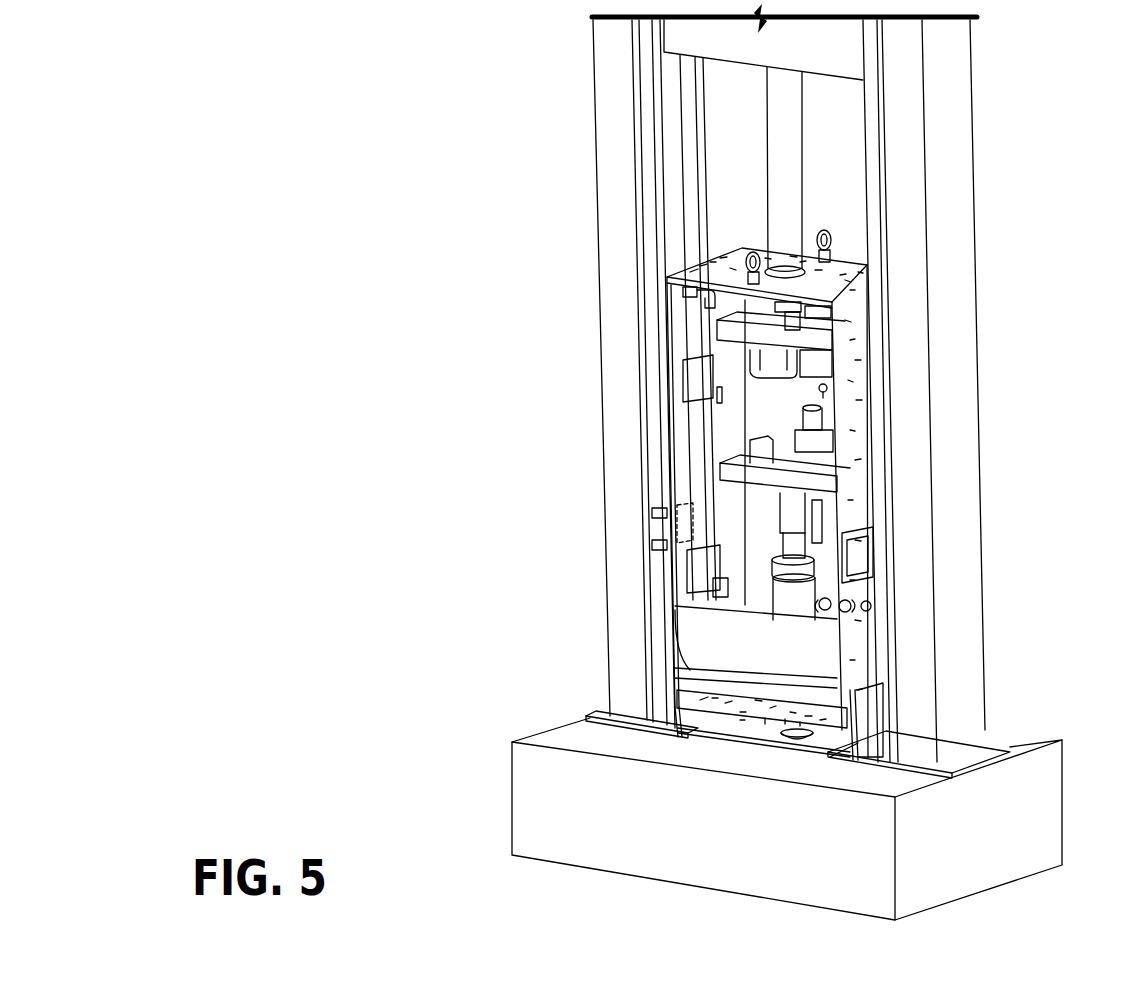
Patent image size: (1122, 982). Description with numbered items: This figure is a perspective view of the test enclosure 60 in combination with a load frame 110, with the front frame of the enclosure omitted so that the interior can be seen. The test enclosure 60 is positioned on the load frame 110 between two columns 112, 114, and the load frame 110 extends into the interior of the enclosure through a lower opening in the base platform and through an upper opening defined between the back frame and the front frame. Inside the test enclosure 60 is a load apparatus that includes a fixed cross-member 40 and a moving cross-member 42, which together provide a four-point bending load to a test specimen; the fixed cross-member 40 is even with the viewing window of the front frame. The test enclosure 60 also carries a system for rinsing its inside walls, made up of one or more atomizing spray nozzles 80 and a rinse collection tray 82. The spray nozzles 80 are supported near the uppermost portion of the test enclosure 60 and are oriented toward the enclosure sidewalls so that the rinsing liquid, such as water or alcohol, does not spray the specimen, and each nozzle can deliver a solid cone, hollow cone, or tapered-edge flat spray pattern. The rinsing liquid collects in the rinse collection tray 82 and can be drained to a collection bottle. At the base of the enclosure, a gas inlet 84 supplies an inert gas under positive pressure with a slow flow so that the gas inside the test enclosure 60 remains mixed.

The fixed cross-member 40 is at (815, 488).
The moving cross-member 42 is at (827, 352).
The test enclosure 60 is at (720, 230).
The atomizing spray nozzle 80 is at (703, 276).
The rinse collection tray 82 is at (810, 668).
The gas inlet 84 is at (838, 606).
The load frame 110 is at (978, 181).
The column 112 is at (622, 402).
The column 114 is at (950, 342).